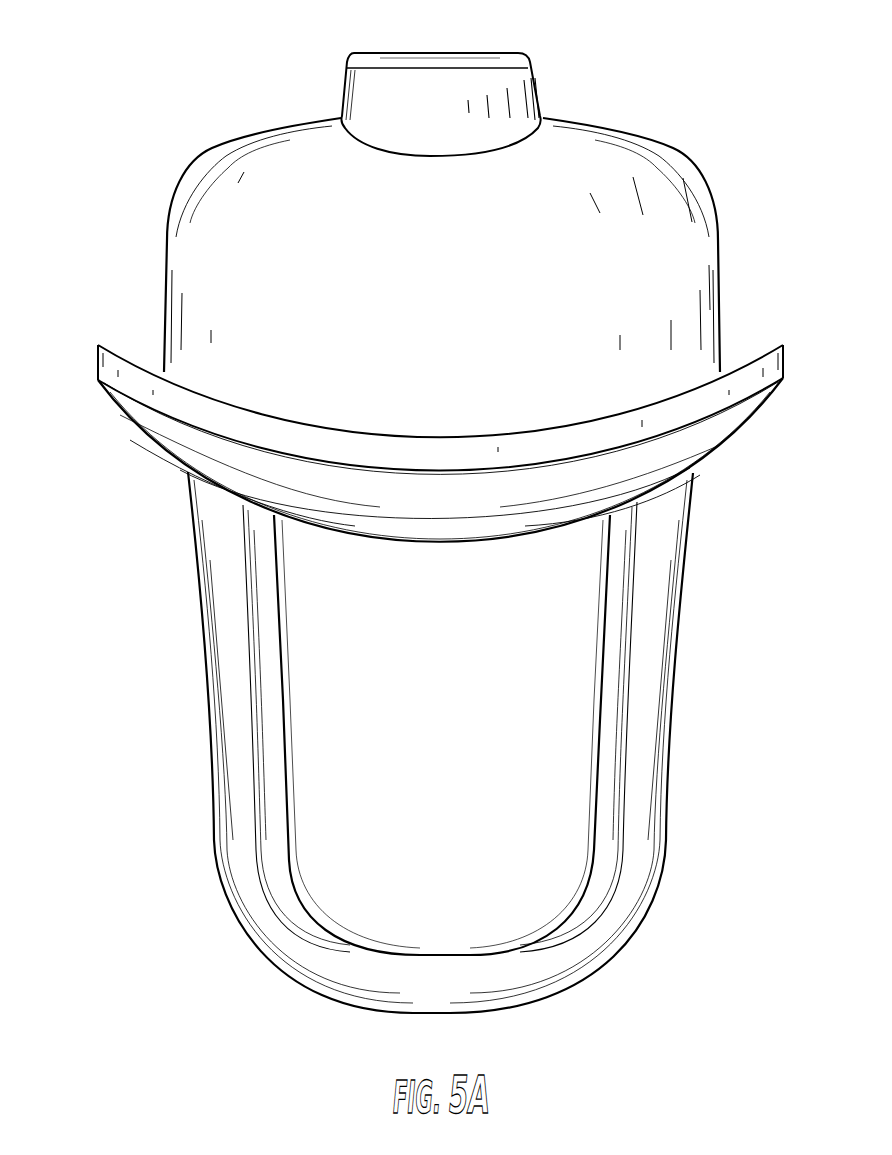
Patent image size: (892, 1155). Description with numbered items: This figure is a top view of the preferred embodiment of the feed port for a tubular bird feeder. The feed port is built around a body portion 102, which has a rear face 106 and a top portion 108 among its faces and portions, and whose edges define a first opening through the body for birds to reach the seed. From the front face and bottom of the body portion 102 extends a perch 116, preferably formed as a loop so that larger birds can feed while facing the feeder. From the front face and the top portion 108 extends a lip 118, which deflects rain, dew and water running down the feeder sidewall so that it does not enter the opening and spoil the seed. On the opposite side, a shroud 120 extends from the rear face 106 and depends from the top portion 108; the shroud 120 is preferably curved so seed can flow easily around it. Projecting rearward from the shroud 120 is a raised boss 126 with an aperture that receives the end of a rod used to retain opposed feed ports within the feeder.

The body portion 102 is at (98, 380).
The rear face 106 is at (138, 368).
The top portion 108 is at (412, 457).
The perch 116 is at (460, 950).
The lip 118 is at (472, 543).
The shroud 120 is at (193, 162).
The raised boss 126 is at (340, 86).